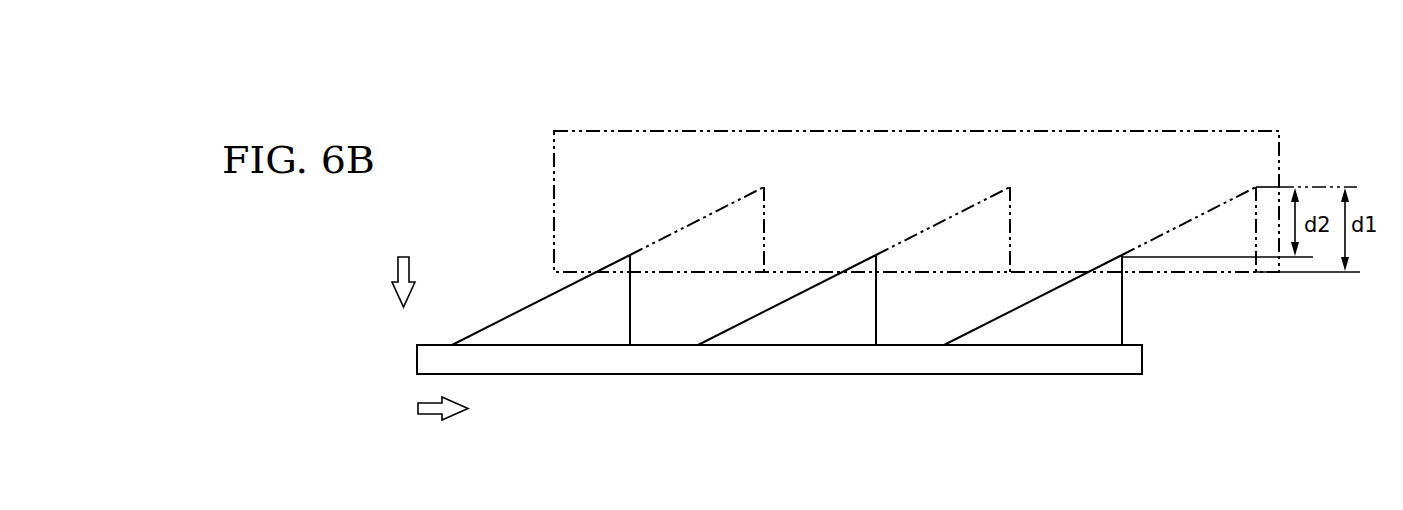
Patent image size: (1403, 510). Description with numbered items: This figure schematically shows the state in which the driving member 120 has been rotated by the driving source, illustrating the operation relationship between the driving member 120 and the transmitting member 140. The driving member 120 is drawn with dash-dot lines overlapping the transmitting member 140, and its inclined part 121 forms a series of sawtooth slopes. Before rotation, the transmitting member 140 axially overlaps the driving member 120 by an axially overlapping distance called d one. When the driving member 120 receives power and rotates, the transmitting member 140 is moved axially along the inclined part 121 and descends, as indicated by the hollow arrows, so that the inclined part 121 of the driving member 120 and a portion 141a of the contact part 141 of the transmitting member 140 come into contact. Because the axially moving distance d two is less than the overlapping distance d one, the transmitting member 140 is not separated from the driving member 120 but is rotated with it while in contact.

The driving member 120 is at (536, 172).
The inclined part 121 is at (675, 233).
The transmitting member 140 is at (402, 365).
The contact part 141 is at (547, 326).
The portion of the contact part 141a is at (624, 264).